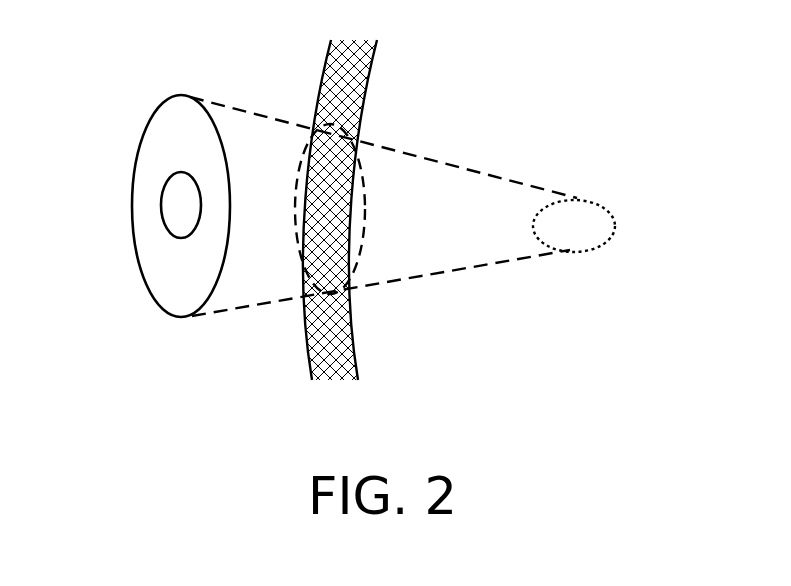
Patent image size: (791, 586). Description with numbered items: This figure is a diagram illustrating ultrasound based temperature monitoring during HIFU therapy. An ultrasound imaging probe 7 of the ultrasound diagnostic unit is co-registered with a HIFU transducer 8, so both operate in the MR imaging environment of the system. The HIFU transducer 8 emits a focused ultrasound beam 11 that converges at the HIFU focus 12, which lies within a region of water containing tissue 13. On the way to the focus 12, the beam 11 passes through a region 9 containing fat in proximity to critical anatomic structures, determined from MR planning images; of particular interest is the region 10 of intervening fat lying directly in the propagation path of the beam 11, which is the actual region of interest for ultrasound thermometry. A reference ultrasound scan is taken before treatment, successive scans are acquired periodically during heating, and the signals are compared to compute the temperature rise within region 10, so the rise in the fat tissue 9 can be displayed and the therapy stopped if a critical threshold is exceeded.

The ultrasound imaging probe 7 is at (163, 208).
The HIFU transducer 8 is at (163, 128).
The region containing fat 9 is at (380, 60).
The region of intervening fat 10 is at (363, 220).
The focused ultrasound beam 11 is at (447, 160).
The HIFU focus 12 is at (616, 226).
The region of water containing tissue 13 is at (600, 152).